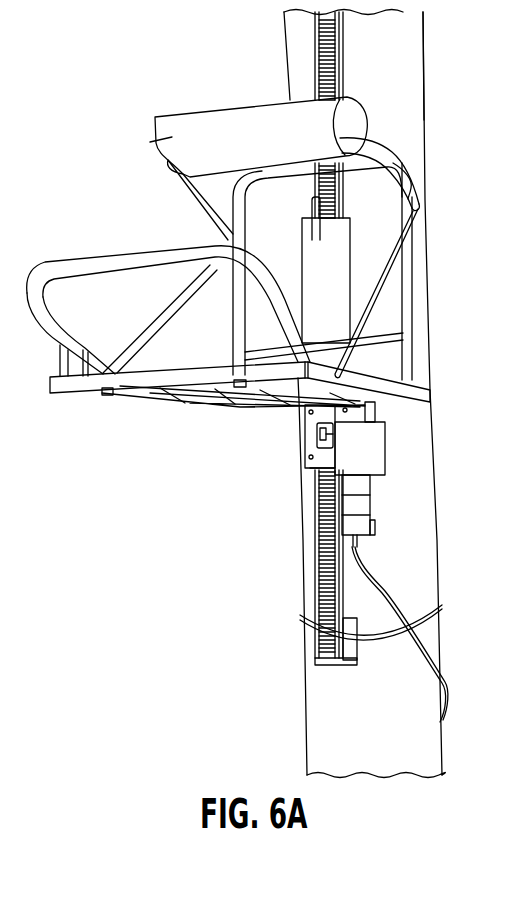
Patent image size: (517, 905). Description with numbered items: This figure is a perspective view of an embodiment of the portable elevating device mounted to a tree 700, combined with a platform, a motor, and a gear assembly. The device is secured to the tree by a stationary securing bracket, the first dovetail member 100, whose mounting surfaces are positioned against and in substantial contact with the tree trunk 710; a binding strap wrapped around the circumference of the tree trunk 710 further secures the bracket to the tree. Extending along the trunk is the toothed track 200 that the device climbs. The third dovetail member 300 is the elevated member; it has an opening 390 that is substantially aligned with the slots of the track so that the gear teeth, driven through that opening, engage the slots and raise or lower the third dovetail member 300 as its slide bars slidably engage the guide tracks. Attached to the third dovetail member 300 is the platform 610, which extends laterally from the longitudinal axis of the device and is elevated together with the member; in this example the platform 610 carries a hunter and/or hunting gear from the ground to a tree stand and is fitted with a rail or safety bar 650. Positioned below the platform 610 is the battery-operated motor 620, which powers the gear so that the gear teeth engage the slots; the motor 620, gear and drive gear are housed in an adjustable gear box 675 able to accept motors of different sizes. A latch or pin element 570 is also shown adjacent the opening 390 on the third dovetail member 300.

The first dovetail member 100 is at (357, 655).
The rack track 200 is at (318, 594).
The third dovetail member 300 is at (332, 272).
The opening 390 is at (322, 450).
The locking pin 570 is at (318, 465).
The platform 610 is at (50, 387).
The motor 620 is at (357, 505).
The rail or safety bar 650 is at (158, 142).
The gear box 675 is at (363, 447).
The tree 700 is at (408, 105).
The tree trunk 710 is at (397, 74).